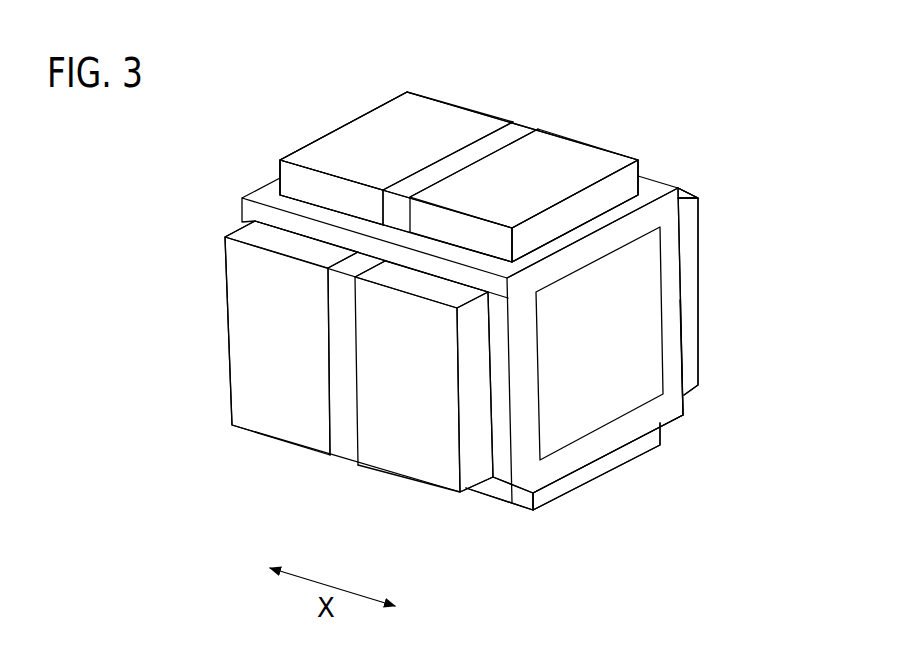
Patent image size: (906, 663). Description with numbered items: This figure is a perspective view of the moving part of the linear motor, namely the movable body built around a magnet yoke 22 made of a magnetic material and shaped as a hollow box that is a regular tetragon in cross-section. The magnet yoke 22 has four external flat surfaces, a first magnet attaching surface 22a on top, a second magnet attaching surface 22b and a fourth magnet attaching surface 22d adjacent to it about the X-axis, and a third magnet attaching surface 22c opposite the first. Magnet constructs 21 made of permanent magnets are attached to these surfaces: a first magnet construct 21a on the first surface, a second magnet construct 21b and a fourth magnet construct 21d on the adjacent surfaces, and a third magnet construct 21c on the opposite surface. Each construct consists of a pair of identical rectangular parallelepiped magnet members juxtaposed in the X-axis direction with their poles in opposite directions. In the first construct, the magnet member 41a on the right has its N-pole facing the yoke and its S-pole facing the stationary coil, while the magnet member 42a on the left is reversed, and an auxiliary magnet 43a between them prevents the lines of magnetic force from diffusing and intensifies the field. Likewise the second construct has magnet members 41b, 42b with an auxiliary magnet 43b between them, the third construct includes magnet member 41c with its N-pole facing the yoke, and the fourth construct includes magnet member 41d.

The magnet constructs 21 is at (378, 90).
The first magnet construct 21a is at (325, 133).
The second magnet construct 21b is at (226, 377).
The third magnet construct 21c is at (553, 505).
The fourth magnet construct 21d is at (700, 322).
The magnet yoke 22 is at (668, 234).
The first magnet attaching surface 22a is at (267, 196).
The second magnet attaching surface 22b is at (497, 486).
The third magnet attaching surface 22c is at (669, 418).
The fourth magnet attaching surface 22d is at (685, 358).
The magnet member 41a is at (571, 150).
The magnet member 41b is at (403, 464).
The magnet member 41c is at (597, 468).
The magnet member 41d is at (692, 293).
The magnet member 42a is at (433, 112).
The magnet member 42b is at (280, 429).
The auxiliary magnet 43a is at (513, 128).
The auxiliary magnet 43b is at (345, 446).